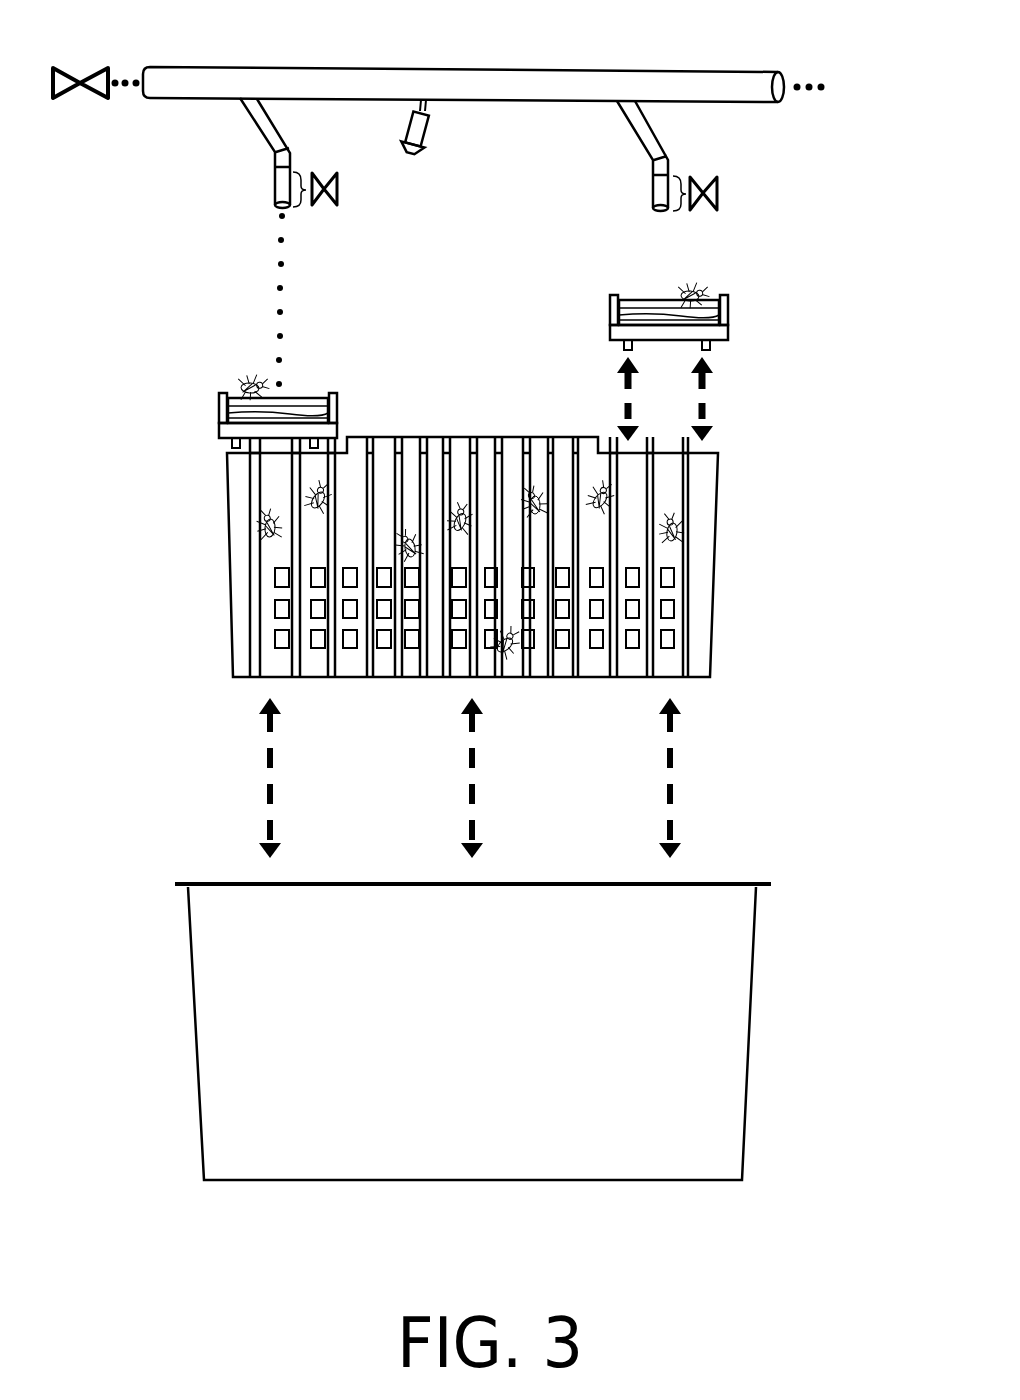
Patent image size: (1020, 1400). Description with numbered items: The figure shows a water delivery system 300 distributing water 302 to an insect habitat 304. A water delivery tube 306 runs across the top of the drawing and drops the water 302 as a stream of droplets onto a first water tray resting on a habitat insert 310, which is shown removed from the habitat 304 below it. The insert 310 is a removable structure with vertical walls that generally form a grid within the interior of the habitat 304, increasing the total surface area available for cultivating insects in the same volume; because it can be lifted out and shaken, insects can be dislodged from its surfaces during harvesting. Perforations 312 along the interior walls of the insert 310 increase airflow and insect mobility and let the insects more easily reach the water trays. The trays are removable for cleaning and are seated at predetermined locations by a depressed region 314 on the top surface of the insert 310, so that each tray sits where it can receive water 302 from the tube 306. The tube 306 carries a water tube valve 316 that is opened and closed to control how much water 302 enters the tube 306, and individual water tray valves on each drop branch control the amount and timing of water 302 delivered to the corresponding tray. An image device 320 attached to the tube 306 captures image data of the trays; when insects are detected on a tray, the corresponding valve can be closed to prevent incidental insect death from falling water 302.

The water delivery system 300 is at (194, 42).
The water 302 is at (305, 276).
The habitat 304 is at (780, 997).
The water delivery tube 306 is at (756, 56).
The habitat insert 310 is at (740, 573).
The perforations 312 is at (348, 672).
The depressed region 314 is at (720, 435).
The water tube valve 316 is at (82, 110).
The image device 320 is at (442, 138).